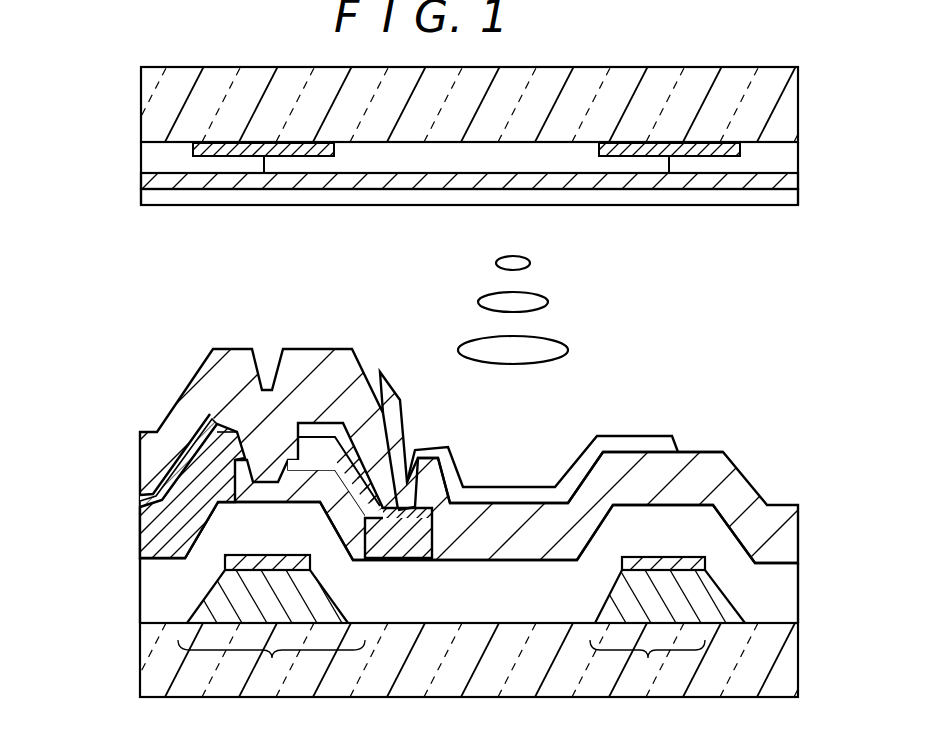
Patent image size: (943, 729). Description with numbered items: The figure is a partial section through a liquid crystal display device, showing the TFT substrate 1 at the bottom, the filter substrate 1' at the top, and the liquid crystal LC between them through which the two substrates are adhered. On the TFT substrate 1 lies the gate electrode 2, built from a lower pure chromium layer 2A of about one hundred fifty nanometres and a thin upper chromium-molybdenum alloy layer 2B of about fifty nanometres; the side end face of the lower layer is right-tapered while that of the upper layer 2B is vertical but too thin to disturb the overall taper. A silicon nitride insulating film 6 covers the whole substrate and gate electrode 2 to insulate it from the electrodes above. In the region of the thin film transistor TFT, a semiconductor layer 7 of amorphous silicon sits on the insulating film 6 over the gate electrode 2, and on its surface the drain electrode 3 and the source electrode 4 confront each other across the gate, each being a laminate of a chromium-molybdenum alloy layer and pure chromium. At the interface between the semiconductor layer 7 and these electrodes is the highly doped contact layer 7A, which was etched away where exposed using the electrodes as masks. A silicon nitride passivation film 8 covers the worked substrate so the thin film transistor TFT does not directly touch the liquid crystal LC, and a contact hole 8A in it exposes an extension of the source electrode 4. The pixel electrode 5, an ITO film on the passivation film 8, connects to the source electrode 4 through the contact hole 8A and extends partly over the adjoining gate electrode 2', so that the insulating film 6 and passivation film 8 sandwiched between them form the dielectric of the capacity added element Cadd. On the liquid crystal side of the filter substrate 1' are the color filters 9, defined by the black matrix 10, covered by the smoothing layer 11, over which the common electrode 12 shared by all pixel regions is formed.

The TFT substrate 1 is at (457, 660).
The filter substrate 1' is at (456, 104).
The gate electrode 2 is at (210, 589).
The lower layer of gate electrode 2A is at (218, 598).
The upper layer of gate electrode 2B is at (223, 562).
The adjoining gate electrode 2' is at (725, 590).
The drain electrode 3 is at (199, 438).
The source electrode 4 is at (313, 440).
The pixel electrode 5 is at (540, 493).
The insulating film 6 is at (225, 540).
The semiconductor layer 7 is at (233, 492).
The contact layer 7A is at (222, 470).
The passivation film 8 is at (355, 371).
The contact hole 8A is at (410, 492).
The color filter 9 is at (563, 157).
The black matrix 10 is at (263, 142).
The smoothing layer 11 is at (157, 181).
The common electrode 12 is at (190, 206).
The liquid crystal LC is at (532, 288).
The thin film transistor TFT is at (271, 662).
The capacity added element Cadd is at (646, 662).